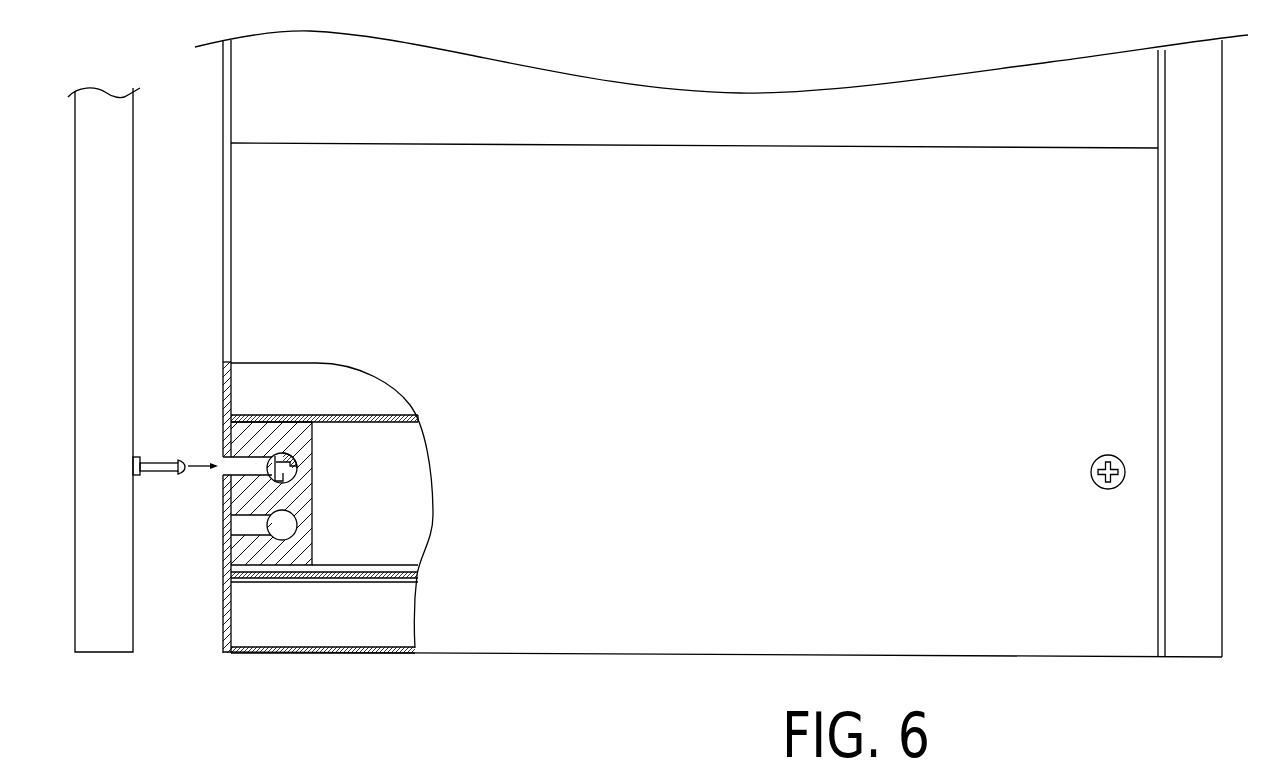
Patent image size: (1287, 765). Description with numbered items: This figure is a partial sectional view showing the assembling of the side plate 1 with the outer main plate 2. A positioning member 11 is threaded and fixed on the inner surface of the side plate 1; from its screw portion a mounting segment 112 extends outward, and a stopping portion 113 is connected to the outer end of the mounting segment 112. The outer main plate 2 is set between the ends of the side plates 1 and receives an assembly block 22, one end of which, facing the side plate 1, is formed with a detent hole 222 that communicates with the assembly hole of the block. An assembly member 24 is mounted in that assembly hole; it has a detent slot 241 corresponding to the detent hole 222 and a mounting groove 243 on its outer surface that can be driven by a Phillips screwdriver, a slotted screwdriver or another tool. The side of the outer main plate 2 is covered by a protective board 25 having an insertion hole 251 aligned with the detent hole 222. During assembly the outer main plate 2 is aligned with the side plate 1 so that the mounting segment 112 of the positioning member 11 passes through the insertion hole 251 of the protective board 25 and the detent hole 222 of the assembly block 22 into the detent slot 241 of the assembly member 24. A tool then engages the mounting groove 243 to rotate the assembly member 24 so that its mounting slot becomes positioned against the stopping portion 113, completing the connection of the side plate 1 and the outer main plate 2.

The side plate 1 is at (1205, 458).
The outer main plate 2 is at (693, 622).
The positioning member 11 is at (175, 472).
The mounting segment 112 is at (153, 471).
The stopping portion 113 is at (185, 478).
The assembly block 22 is at (282, 570).
The detent hole 222 is at (222, 458).
The assembly member 24 is at (290, 468).
The detent slot 241 is at (300, 530).
The mounting groove 243 is at (1098, 485).
The protective board 25 is at (227, 655).
The insertion hole 251 is at (223, 609).